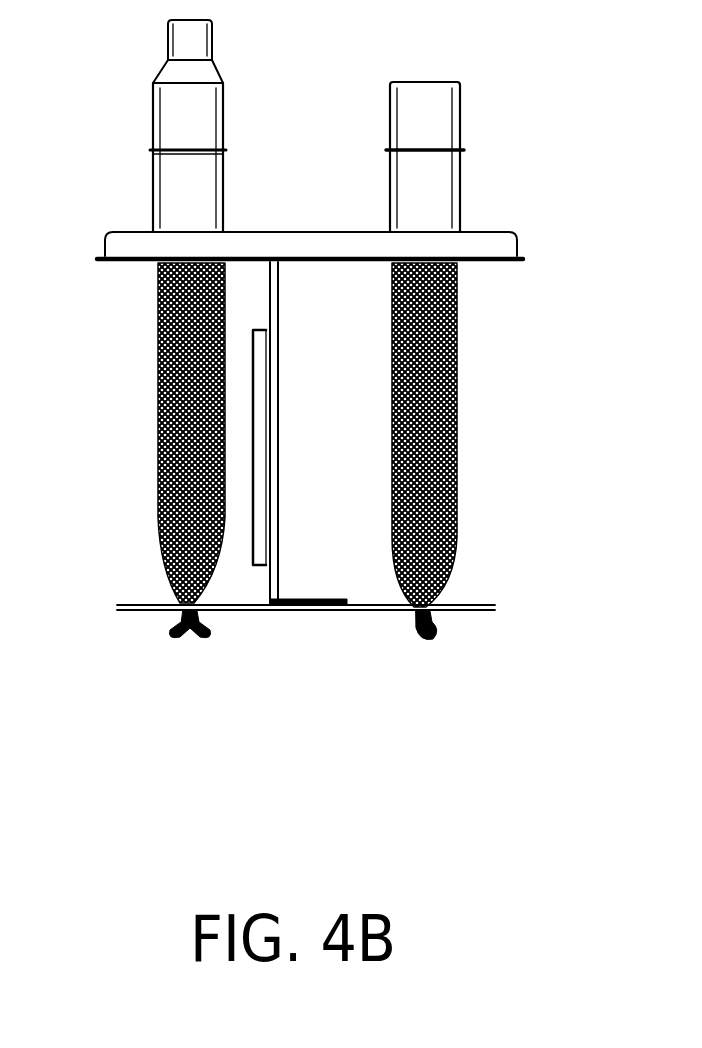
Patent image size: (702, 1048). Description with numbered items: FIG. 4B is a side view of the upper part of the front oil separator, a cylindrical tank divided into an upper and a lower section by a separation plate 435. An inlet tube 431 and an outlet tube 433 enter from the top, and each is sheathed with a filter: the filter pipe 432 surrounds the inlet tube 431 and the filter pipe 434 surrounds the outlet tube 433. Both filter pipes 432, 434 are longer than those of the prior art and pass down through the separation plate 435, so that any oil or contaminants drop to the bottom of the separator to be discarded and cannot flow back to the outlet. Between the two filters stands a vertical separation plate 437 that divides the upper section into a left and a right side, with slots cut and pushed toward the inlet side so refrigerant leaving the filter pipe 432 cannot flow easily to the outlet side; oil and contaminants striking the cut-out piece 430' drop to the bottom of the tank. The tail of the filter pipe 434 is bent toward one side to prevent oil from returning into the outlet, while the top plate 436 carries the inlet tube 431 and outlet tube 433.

The inlet tube 431 is at (225, 95).
The filter pipe 432 is at (158, 405).
The outlet tube 433 is at (448, 108).
The filter pipe 434 is at (457, 416).
The separation plate 435 is at (495, 606).
The top plate 436 is at (505, 232).
The vertical separation plate 437 is at (278, 410).
The sensor element 430' is at (301, 447).